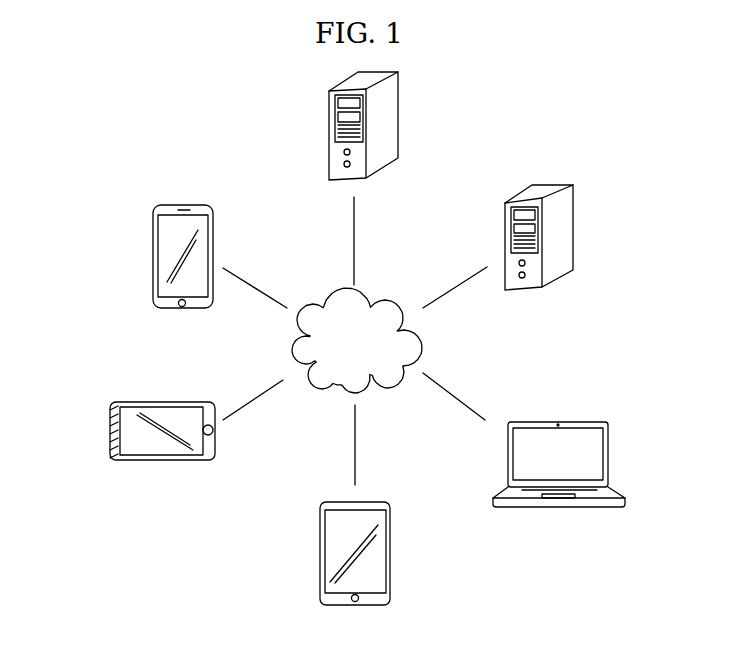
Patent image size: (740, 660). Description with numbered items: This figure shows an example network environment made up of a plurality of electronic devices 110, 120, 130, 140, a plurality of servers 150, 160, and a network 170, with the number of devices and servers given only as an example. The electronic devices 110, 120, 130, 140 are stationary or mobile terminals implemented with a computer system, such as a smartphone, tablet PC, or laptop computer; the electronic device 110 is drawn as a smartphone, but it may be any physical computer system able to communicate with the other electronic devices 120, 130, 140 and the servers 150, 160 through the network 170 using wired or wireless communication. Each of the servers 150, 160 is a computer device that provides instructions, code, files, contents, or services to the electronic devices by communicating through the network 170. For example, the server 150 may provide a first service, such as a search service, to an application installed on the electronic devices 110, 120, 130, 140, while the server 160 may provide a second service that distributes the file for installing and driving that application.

The electronic device 110 is at (153, 258).
The electronic device 120 is at (105, 428).
The electronic device 130 is at (392, 552).
The electronic device 140 is at (610, 453).
The server 150 is at (575, 228).
The server 160 is at (400, 115).
The network 170 is at (377, 302).